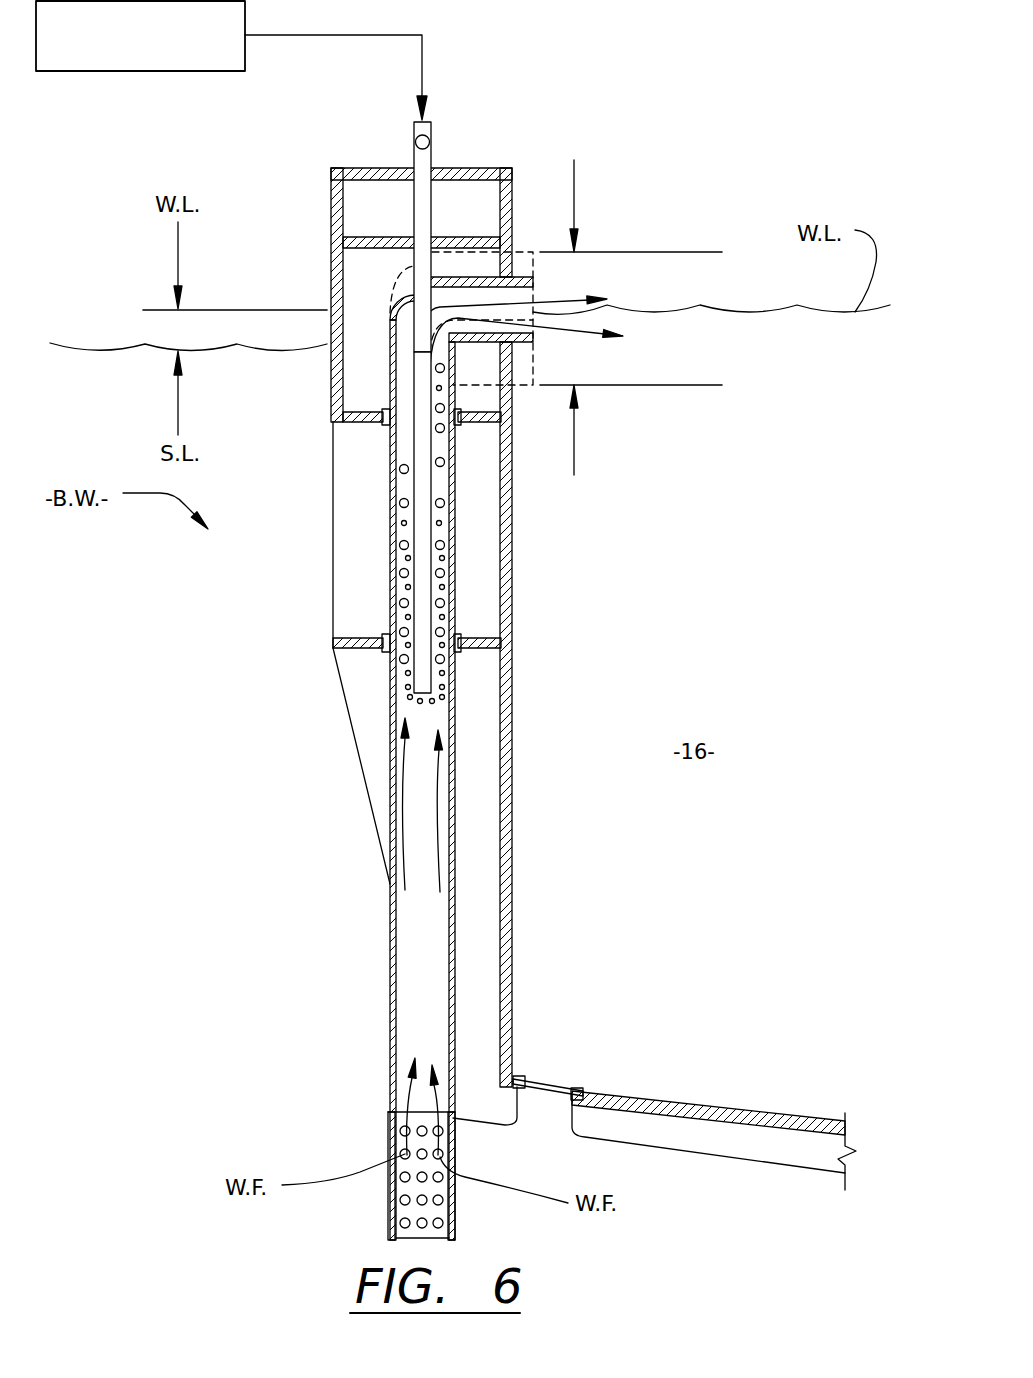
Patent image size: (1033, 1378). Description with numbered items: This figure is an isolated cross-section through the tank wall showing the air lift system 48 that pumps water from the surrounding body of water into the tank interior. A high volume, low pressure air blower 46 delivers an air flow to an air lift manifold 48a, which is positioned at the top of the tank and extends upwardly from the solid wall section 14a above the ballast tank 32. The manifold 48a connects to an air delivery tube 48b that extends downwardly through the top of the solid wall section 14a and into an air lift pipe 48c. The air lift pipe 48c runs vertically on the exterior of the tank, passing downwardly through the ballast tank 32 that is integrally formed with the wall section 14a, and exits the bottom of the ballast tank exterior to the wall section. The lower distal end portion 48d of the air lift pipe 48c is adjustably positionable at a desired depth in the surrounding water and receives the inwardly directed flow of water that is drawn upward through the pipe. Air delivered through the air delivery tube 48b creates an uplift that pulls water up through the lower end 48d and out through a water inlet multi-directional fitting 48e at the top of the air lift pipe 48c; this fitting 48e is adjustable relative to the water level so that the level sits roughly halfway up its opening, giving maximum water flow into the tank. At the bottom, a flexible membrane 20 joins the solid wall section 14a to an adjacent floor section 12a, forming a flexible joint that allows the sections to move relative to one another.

The air blower 46 is at (141, 72).
The air lift system 48 is at (445, 59).
The air lift manifold 48a is at (431, 143).
The air delivery tube 48b is at (425, 529).
The air lift pipe 48c is at (455, 862).
The lower distal end portion 48d is at (455, 1225).
The water inlet multi-directional fitting 48e is at (533, 342).
The ballast tank 32 is at (355, 202).
The solid wall section 14a is at (513, 672).
The flexible membrane 20 is at (557, 1082).
The floor section 12a is at (617, 1097).